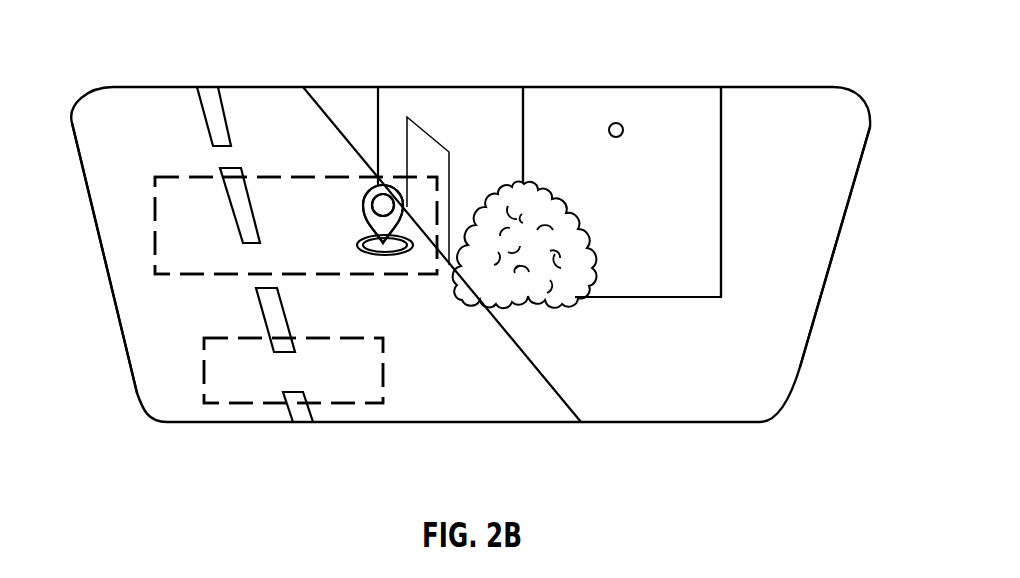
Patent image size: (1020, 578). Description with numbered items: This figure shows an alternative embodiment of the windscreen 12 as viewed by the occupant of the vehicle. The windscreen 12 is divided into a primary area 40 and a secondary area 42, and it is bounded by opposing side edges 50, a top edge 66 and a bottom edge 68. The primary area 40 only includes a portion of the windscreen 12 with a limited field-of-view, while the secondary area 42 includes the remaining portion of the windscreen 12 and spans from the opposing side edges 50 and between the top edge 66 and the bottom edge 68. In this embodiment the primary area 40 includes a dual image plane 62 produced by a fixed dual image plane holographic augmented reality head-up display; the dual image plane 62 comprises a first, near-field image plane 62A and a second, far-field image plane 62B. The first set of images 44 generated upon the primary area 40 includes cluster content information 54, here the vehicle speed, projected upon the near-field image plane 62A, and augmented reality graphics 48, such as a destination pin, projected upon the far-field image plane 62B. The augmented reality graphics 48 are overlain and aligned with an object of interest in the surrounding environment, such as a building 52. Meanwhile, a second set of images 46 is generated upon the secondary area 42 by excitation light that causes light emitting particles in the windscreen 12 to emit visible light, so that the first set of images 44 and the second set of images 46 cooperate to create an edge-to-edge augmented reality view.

The windscreen 12 is at (848, 92).
The opposing side edges 50 is at (101, 258).
The primary area 40 is at (272, 176).
The dual image plane 62 is at (148, 220).
The near-field image plane 62A is at (197, 197).
The far-field image plane 62B is at (228, 388).
The cluster content information 54 is at (360, 369).
The first set of images 44 is at (306, 331).
The augmented reality graphics 48 is at (394, 186).
The top edge 66 is at (440, 87).
The bottom edge 68 is at (567, 405).
The secondary area 42 is at (665, 211).
The building 52 is at (721, 183).
The second set of images 46 is at (617, 115).